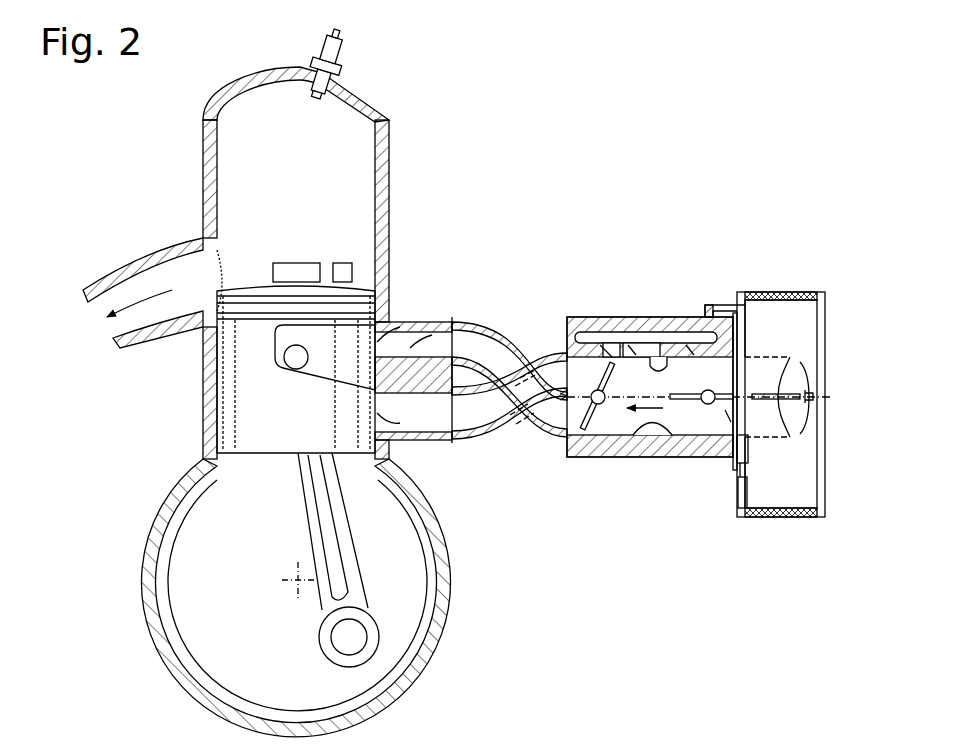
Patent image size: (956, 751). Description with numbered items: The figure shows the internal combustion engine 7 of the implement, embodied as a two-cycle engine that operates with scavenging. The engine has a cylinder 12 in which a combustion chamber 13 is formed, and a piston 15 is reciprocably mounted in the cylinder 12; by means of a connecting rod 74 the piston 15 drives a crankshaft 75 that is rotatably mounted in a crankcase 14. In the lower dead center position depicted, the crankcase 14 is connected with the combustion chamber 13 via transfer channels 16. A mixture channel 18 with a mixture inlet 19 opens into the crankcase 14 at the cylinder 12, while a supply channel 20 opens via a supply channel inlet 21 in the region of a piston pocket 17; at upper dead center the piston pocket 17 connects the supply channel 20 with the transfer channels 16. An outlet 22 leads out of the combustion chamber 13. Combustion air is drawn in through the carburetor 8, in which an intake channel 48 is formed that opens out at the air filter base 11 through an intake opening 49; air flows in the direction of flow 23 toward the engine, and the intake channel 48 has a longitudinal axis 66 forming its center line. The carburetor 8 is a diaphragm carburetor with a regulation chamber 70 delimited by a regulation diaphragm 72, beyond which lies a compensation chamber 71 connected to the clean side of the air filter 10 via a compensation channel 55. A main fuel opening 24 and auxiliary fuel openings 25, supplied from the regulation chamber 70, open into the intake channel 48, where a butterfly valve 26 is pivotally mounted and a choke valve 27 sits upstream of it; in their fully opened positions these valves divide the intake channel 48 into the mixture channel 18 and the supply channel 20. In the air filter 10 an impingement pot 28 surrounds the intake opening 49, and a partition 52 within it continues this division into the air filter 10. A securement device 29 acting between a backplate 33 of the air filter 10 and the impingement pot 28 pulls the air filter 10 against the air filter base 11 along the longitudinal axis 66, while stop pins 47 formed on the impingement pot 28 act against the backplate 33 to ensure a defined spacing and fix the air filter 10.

The internal combustion engine 7 is at (112, 180).
The carburetor 8 is at (568, 307).
The air filter 10 is at (783, 283).
The air filter base 11 is at (733, 487).
The cylinder 12 is at (207, 145).
The combustion chamber 13 is at (357, 152).
The crankcase 14 is at (432, 647).
The piston 15 is at (242, 395).
The transfer channels 16 is at (342, 268).
The piston pocket 17 is at (333, 367).
The mixture channel 18 is at (463, 425).
The mixture inlet 19 is at (420, 432).
The supply channel 20 is at (438, 328).
The supply channel inlet 21 is at (400, 330).
The outlet 22 is at (118, 325).
The direction of flow 23 is at (646, 425).
The main fuel opening 24 is at (652, 350).
The auxiliary fuel openings 25 is at (608, 357).
The butterfly valve 26 is at (586, 432).
The choke valve 27 is at (683, 405).
The impingement pot 28 is at (787, 445).
The securement device 29 is at (812, 388).
The backplate 33 is at (820, 482).
The stop pins 47 is at (803, 370).
The intake channel 48 is at (618, 422).
The intake opening 49 is at (727, 417).
The partition 52 is at (768, 403).
The compensation channel 55 is at (722, 307).
The longitudinal axis 66 is at (566, 437).
The regulation chamber 70 is at (633, 343).
The compensation chamber 71 is at (690, 345).
The regulation diaphragm 72 is at (675, 345).
The connecting rod 74 is at (347, 542).
The crankshaft 75 is at (297, 587).